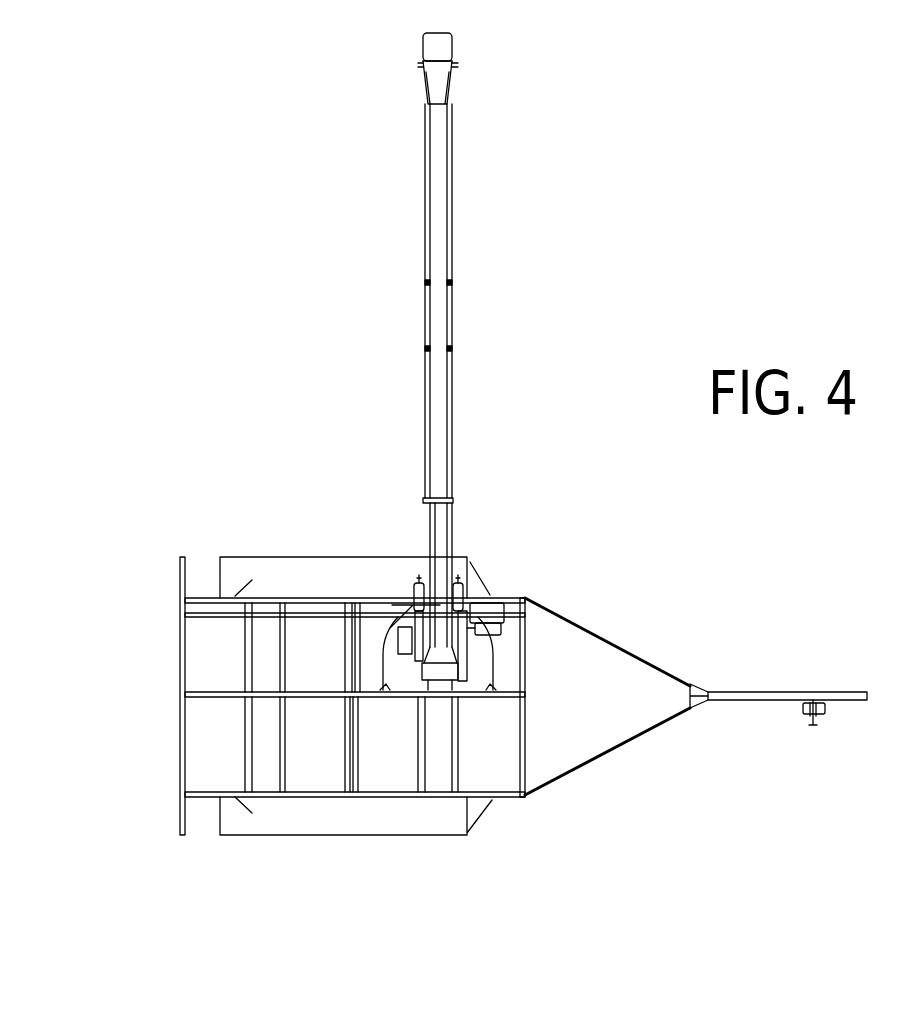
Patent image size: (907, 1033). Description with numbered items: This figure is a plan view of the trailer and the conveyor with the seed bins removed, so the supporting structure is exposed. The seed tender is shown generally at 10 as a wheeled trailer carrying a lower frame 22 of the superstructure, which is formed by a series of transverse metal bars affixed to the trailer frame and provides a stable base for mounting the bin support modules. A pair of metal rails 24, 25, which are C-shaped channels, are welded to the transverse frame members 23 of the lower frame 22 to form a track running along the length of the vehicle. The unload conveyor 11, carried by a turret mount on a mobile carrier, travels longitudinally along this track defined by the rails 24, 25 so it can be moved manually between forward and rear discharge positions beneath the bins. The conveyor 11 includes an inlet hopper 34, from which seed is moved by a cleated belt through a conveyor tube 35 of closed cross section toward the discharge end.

The trailer 10 is at (636, 622).
The unload conveyor 11 is at (391, 340).
The lower frame 22 is at (529, 807).
The transverse frame members 23 is at (180, 752).
The metal rail 24 is at (207, 693).
The metal rail 25 is at (205, 613).
The inlet hopper 34 is at (437, 655).
The conveyor tube 35 is at (437, 162).